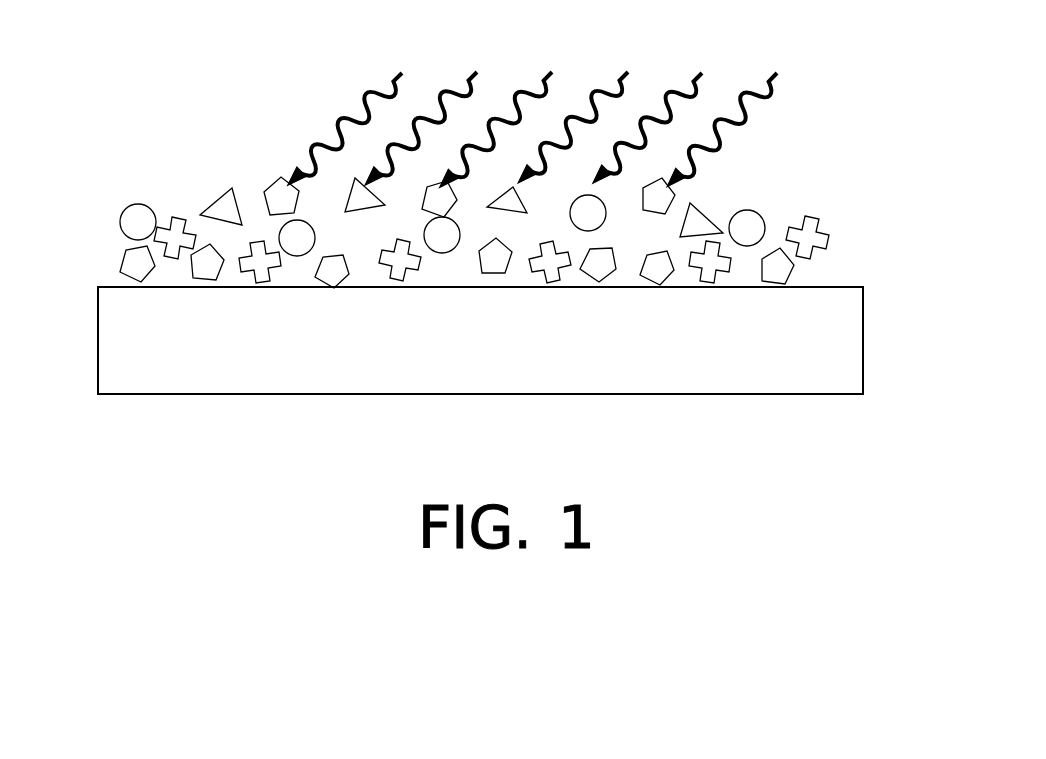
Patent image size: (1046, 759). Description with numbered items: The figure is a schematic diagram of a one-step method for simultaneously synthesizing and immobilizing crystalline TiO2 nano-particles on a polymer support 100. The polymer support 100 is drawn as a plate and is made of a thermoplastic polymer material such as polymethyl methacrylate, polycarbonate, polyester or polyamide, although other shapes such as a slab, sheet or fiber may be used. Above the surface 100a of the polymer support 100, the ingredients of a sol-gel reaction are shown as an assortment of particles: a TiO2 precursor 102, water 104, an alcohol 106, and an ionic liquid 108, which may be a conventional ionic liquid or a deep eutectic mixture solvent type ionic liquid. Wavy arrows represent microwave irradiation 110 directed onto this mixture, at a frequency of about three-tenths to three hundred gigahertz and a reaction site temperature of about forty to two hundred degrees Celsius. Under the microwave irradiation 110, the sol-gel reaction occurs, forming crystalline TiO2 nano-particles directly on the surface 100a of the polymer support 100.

The polymer support 100 is at (824, 374).
The surface 100a is at (843, 288).
The TiO2 precursor 102 is at (822, 236).
The water 104 is at (220, 197).
The alcohol 106 is at (120, 219).
The ionic liquid 108 is at (277, 182).
The microwave irradiation 110 is at (541, 122).